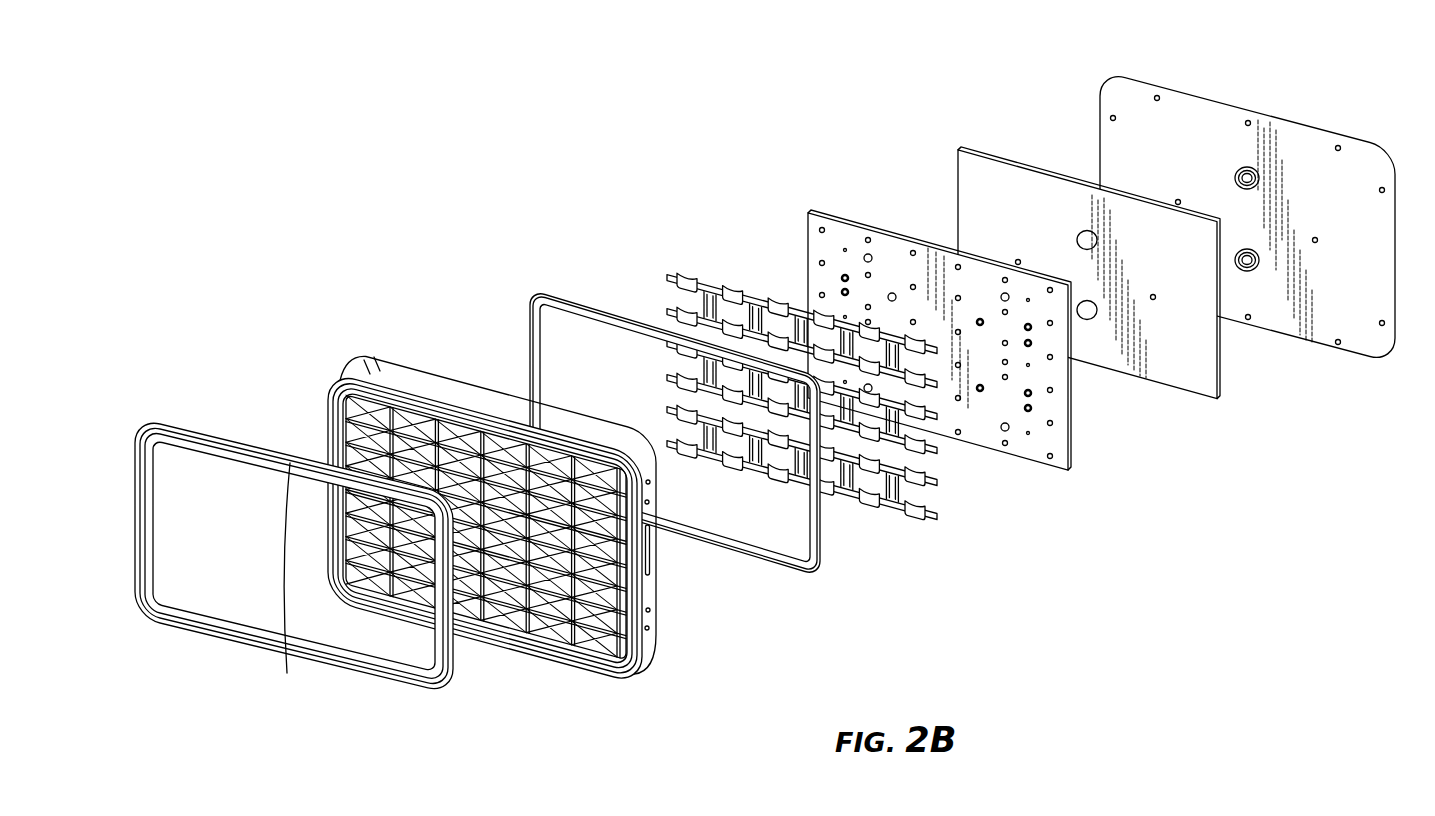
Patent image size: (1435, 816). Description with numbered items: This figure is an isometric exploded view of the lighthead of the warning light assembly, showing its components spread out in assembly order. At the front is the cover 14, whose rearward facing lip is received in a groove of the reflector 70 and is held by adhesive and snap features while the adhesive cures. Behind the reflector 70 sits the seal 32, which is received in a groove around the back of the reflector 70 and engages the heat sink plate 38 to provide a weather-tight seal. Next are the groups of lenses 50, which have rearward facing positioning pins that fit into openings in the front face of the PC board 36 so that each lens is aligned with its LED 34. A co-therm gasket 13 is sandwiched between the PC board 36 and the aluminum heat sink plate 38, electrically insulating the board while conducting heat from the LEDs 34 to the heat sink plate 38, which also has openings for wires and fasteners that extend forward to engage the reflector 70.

The co-therm gasket 13 is at (1005, 185).
The cover 14 is at (255, 470).
The seal 32 is at (593, 298).
The LED 34 is at (913, 253).
The PC board 36 is at (845, 230).
The heat sink plate 38 is at (1192, 108).
The groups of lenses 50 is at (690, 274).
The reflector 70 is at (430, 382).